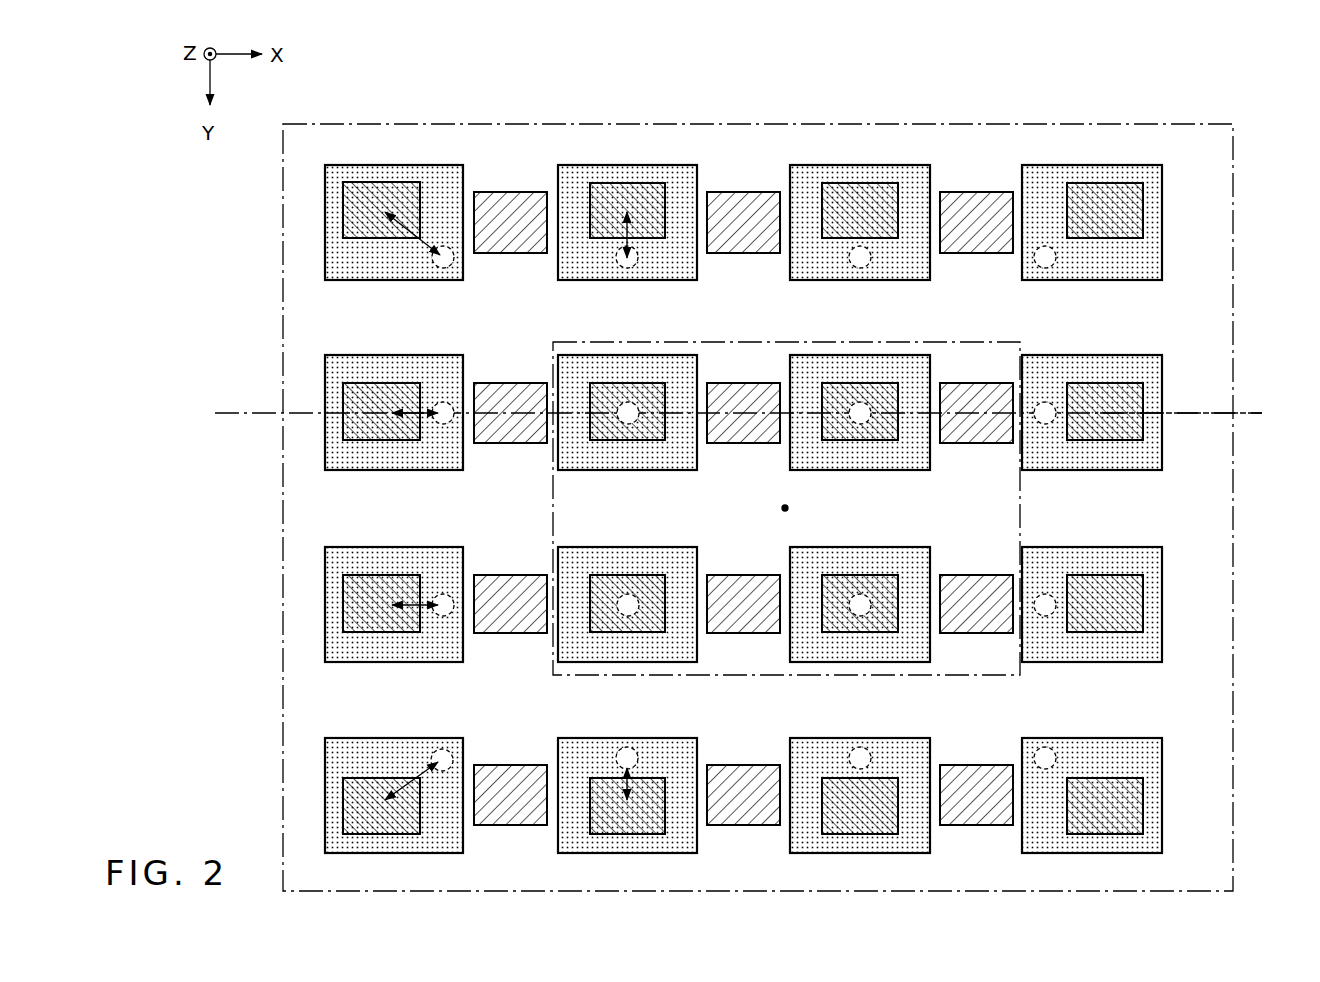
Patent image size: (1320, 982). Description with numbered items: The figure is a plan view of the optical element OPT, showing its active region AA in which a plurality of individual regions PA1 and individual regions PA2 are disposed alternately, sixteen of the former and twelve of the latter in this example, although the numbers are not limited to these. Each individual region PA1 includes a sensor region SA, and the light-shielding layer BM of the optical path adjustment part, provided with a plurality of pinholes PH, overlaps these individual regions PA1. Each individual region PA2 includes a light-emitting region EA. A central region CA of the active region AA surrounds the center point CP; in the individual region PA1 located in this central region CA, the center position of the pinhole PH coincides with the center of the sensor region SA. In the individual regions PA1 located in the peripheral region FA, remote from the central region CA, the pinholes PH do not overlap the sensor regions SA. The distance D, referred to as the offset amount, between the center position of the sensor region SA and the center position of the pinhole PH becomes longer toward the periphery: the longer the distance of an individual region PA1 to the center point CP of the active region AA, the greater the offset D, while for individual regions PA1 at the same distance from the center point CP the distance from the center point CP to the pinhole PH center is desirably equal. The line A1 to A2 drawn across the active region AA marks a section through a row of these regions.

The optical element OPT is at (885, 90).
The active region AA is at (513, 123).
The peripheral region FA is at (1147, 333).
The individual region PA1 is at (743, 468).
The individual region PA2 is at (743, 454).
The sensor region SA is at (645, 184).
The light-emitting region EA is at (735, 243).
The light-shielding layer BM is at (673, 268).
The pinhole PH is at (623, 270).
The offset amount D is at (410, 237).
The center point CP is at (788, 507).
The central region CA is at (750, 676).
The cross-section line end A1 is at (722, 415).
The cross-section line end A2 is at (1197, 415).